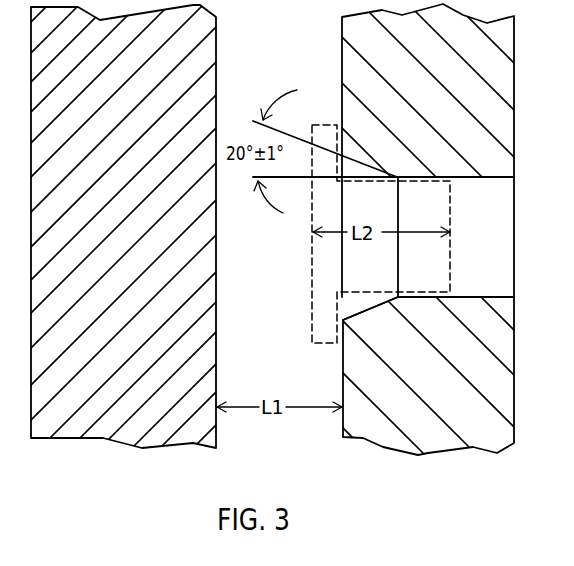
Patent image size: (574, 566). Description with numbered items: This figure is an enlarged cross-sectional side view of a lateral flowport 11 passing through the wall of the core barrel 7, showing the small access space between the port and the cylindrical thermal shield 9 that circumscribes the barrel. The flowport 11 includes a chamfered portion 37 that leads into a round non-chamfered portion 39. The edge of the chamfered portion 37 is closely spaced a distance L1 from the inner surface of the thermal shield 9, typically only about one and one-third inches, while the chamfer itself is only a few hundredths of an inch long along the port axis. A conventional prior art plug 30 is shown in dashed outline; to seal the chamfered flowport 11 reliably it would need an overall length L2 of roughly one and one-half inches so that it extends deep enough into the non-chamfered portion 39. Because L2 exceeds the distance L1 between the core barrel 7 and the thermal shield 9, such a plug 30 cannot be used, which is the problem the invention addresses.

The core barrel 7 is at (436, 104).
The thermal shield 9 is at (121, 207).
The lateral flowport 11 is at (471, 296).
The plug 30 is at (310, 266).
The chamfered portion 37 is at (350, 165).
The non-chamfered portion 39 is at (470, 179).